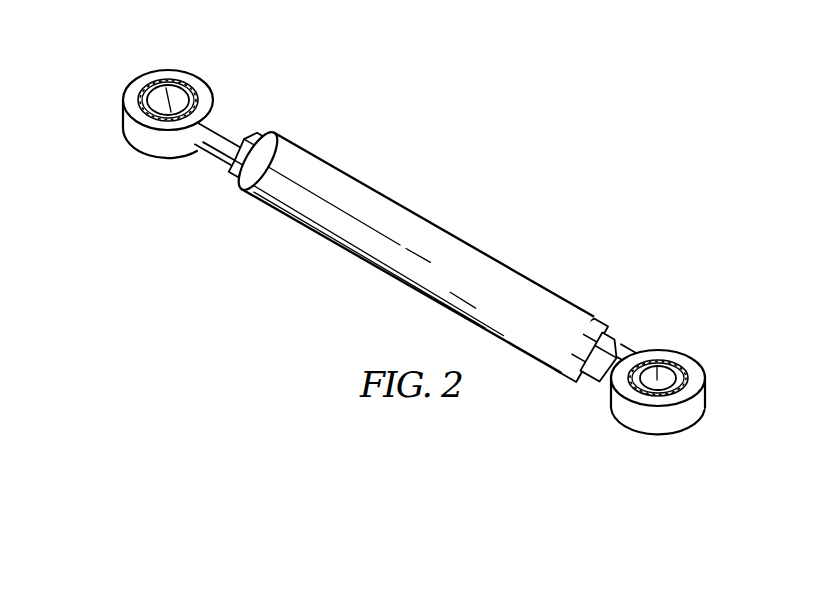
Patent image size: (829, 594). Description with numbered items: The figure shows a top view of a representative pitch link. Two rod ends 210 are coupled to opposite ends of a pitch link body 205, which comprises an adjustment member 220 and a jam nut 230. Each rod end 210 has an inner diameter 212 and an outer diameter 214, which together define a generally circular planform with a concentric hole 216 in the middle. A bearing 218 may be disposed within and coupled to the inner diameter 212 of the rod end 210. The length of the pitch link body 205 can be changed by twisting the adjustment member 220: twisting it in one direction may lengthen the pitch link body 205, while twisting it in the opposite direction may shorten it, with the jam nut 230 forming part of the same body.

The pitch link body 205 is at (665, 288).
The rod end 210 is at (665, 425).
The inner diameter 212 is at (205, 108).
The outer diameter 214 is at (140, 137).
The concentric hole 216 is at (200, 97).
The bearing 218 is at (137, 107).
The adjustment member 220 is at (232, 175).
The jam nut 230 is at (450, 238).